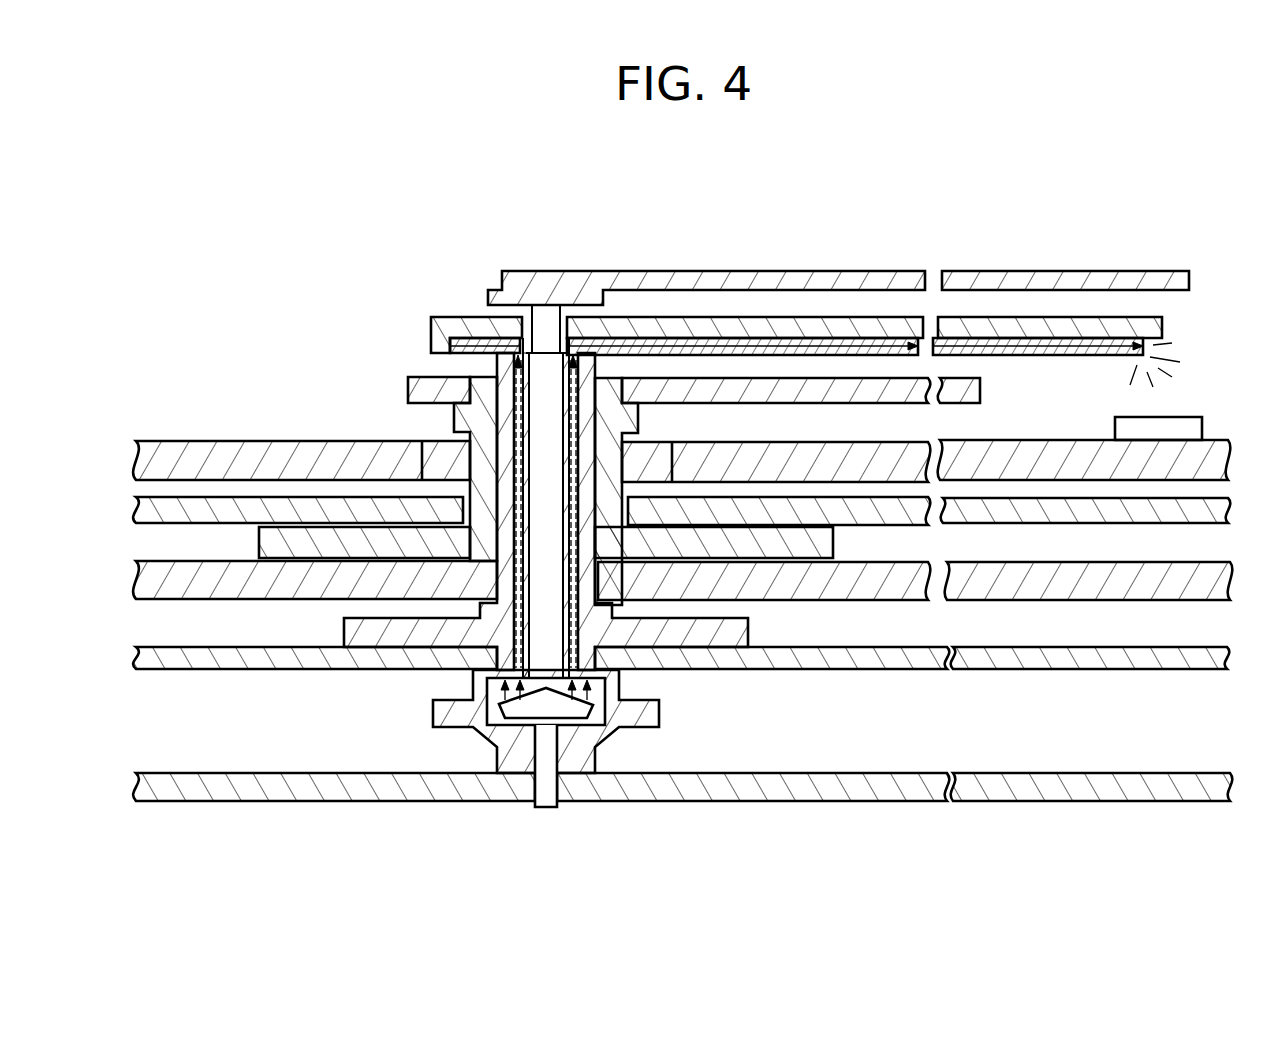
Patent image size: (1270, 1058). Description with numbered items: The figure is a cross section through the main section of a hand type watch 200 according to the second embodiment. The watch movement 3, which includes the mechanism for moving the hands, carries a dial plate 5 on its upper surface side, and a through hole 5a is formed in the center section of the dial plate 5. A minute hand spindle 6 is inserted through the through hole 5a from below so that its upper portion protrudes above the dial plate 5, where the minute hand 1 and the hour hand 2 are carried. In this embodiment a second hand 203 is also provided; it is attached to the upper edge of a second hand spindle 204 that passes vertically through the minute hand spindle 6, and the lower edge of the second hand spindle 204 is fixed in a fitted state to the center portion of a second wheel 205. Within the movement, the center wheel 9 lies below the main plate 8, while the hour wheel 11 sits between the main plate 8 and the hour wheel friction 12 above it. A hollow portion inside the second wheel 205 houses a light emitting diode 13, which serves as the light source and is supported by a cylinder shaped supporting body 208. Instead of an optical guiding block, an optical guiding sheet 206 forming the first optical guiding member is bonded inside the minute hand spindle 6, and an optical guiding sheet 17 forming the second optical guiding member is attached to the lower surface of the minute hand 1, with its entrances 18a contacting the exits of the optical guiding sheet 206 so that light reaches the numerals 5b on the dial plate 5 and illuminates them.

The hand type watch 200 is at (618, 248).
The second hand spindle 204 is at (540, 322).
The entrance 18a is at (556, 335).
The second hand 203 is at (690, 270).
The minute hand 1 is at (997, 316).
The optical guiding sheet 17 is at (1060, 342).
The minute hand spindle 6 is at (507, 369).
The optical guiding sheet 206 is at (512, 366).
The through hole 5a is at (432, 437).
The hour wheel friction 12 is at (185, 505).
The dial plate 5 is at (222, 442).
The hour hand 2 is at (976, 390).
The numeral 5b is at (1190, 423).
The hour wheel 11 is at (830, 545).
The main plate 8 is at (1226, 578).
The watch movement 3 is at (305, 628).
The center wheel 9 is at (410, 650).
The second wheel 205 is at (660, 709).
The light emitting diode 13 is at (523, 710).
The supporting body 208 is at (546, 810).